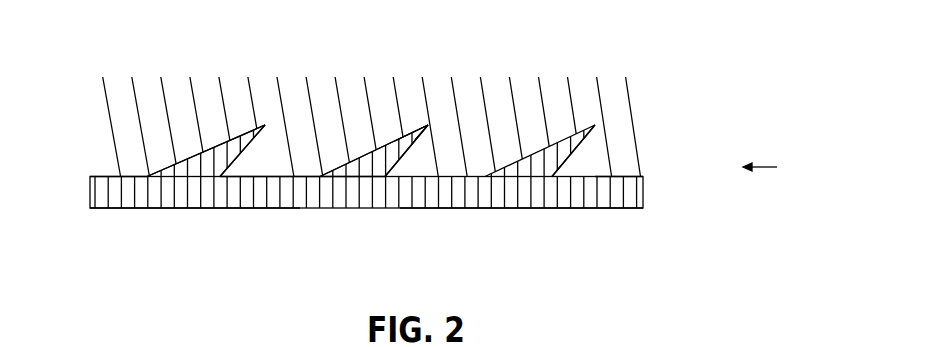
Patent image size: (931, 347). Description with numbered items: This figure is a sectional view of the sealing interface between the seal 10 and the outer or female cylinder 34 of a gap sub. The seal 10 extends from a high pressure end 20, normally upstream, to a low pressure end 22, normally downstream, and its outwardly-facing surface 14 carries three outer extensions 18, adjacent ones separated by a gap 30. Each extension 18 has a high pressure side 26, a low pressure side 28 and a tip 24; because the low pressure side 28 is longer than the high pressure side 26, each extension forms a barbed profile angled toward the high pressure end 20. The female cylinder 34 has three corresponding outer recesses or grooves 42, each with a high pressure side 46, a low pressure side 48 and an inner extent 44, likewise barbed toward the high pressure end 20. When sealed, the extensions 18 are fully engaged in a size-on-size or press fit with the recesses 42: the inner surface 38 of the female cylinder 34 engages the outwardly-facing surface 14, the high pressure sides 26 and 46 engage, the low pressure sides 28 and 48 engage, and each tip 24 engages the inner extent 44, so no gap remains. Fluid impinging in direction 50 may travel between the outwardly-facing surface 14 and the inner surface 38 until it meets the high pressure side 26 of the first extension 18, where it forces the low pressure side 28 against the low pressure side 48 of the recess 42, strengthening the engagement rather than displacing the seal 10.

The seal 10 is at (645, 203).
The outwardly-facing surface 14 is at (615, 158).
The outer extensions 18 is at (356, 177).
The high pressure end 20 is at (647, 218).
The low pressure end 22 is at (86, 208).
The tip 24 is at (263, 127).
The high pressure side 26 is at (235, 160).
The low pressure side 28 is at (192, 156).
The gap 30 is at (270, 177).
The female cylinder 34 is at (630, 103).
The inner surface 38 is at (118, 193).
The outer recesses 42 is at (550, 159).
The inner extent 44 is at (410, 134).
The high pressure side 46 is at (395, 177).
The low pressure side 48 is at (388, 175).
The direction 50 is at (764, 167).